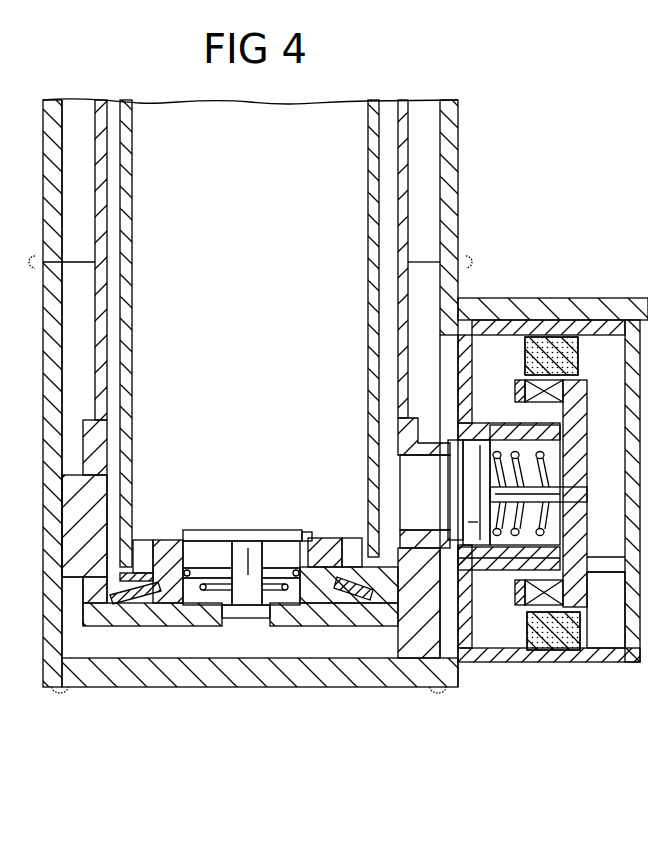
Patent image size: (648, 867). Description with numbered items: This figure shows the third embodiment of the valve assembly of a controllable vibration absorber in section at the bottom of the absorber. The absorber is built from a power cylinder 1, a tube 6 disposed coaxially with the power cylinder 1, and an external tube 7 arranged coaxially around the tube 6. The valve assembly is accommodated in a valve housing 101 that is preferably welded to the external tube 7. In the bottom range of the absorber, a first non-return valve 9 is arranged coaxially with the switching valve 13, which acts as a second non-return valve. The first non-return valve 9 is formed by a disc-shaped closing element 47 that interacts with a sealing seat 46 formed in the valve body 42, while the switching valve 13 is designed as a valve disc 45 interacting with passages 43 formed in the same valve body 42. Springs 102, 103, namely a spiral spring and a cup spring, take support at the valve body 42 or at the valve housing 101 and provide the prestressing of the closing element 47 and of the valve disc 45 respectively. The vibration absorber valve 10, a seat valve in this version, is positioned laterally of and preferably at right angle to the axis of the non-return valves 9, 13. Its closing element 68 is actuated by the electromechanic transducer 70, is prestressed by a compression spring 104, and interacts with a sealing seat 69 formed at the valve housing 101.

The power cylinder 1 is at (373, 100).
The tube 6 is at (404, 100).
The external tube 7 is at (448, 107).
The first non-return valve 9 is at (278, 518).
The vibration absorber valve 10 is at (492, 562).
The switching valve 13 is at (105, 612).
The valve body 42 is at (168, 555).
The passages 43 is at (145, 555).
The valve disc 45 is at (377, 610).
The sealing seat 46 is at (312, 555).
The closing element 47 is at (222, 535).
The closing element 68 is at (480, 455).
The sealing seat 69 is at (450, 453).
The electromechanic transducer 70 is at (589, 612).
The valve housing 101 is at (93, 470).
The spring 102 is at (283, 615).
The spring 103 is at (148, 605).
The compression spring 104 is at (512, 522).